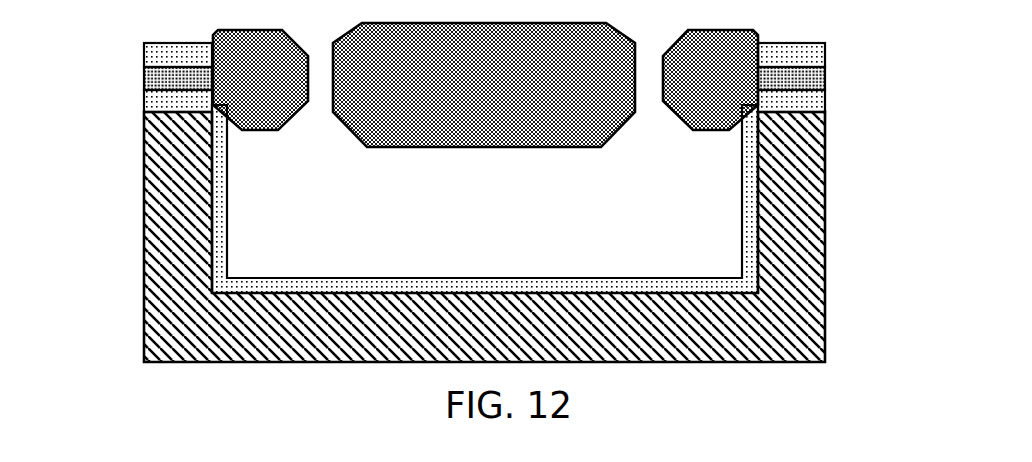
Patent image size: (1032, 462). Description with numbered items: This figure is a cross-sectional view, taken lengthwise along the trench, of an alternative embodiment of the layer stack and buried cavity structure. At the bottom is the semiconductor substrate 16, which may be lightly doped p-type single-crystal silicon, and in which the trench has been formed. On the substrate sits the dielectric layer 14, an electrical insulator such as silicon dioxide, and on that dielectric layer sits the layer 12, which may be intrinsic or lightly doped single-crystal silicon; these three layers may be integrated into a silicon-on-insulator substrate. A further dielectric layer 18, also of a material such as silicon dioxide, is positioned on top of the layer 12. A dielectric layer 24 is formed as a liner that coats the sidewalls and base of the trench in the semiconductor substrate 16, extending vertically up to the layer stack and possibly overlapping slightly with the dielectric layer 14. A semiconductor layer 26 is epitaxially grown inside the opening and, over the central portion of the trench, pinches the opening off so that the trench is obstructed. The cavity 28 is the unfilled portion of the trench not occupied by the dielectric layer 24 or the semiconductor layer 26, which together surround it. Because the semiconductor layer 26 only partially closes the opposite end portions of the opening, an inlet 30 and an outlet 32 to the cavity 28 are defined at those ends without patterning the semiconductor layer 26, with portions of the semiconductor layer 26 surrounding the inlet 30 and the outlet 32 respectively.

The layer 12 is at (163, 82).
The dielectric layer 14 is at (788, 106).
The semiconductor substrate 16 is at (778, 328).
The dielectric layer 18 is at (788, 60).
The dielectric layer 24 is at (222, 190).
The semiconductor layer 26 is at (255, 49).
The cavity 28 is at (507, 217).
The inlet 30 is at (333, 38).
The outlet 32 is at (669, 37).